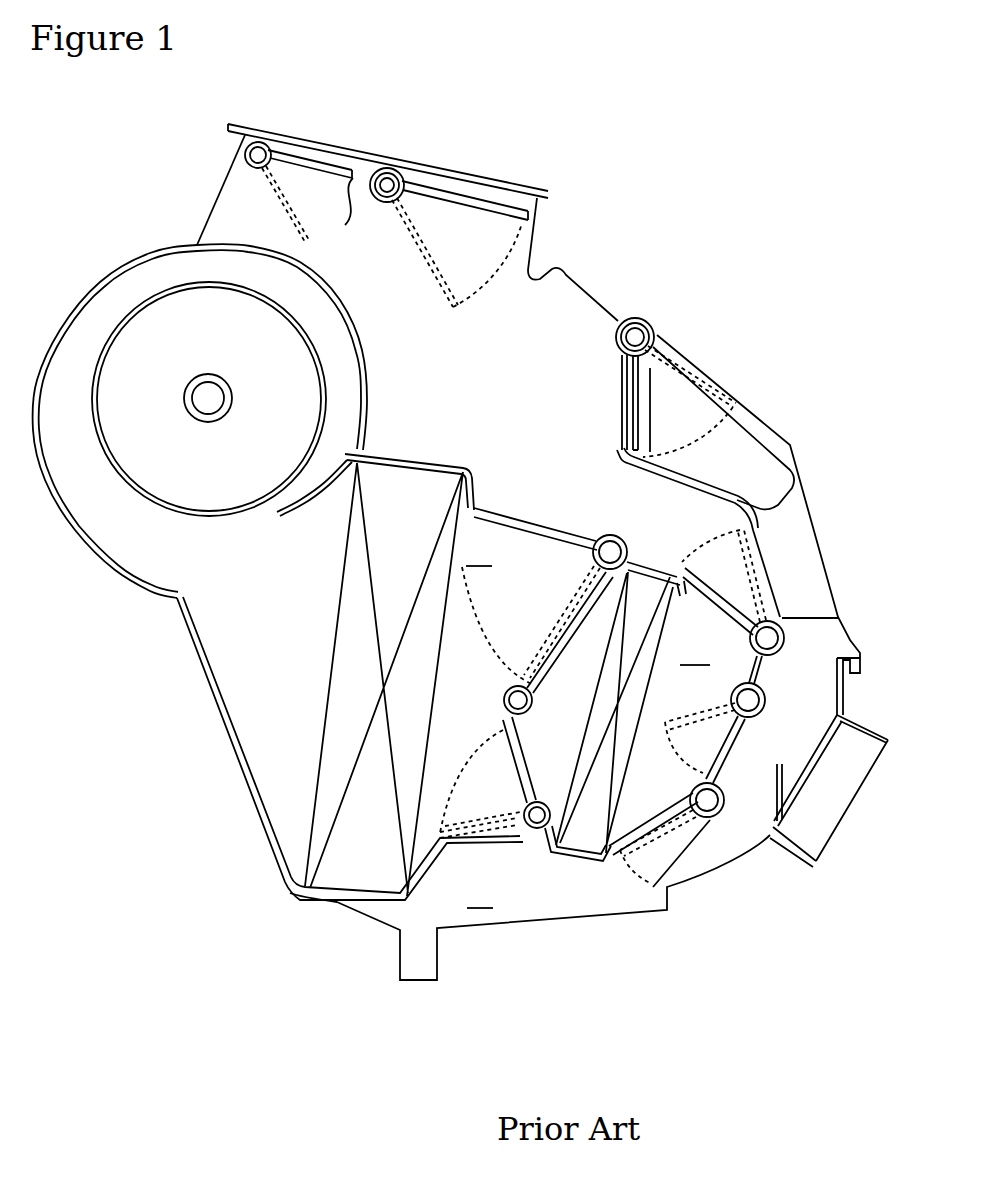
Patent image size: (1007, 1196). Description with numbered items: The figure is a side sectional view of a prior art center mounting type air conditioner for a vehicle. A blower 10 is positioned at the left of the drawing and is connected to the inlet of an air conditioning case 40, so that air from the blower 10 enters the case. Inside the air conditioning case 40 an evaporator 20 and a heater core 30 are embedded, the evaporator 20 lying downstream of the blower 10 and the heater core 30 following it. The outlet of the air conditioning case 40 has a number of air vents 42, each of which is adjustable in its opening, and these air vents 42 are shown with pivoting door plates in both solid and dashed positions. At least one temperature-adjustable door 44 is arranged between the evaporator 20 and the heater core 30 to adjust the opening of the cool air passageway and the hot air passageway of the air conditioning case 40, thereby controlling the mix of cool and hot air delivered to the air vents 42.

The blower 10 is at (95, 565).
The evaporator 20 is at (338, 875).
The heater core 30 is at (578, 840).
The air conditioning case 40 is at (598, 300).
The air vent 42 is at (312, 140).
The temperature-adjustable door 44 is at (513, 530).